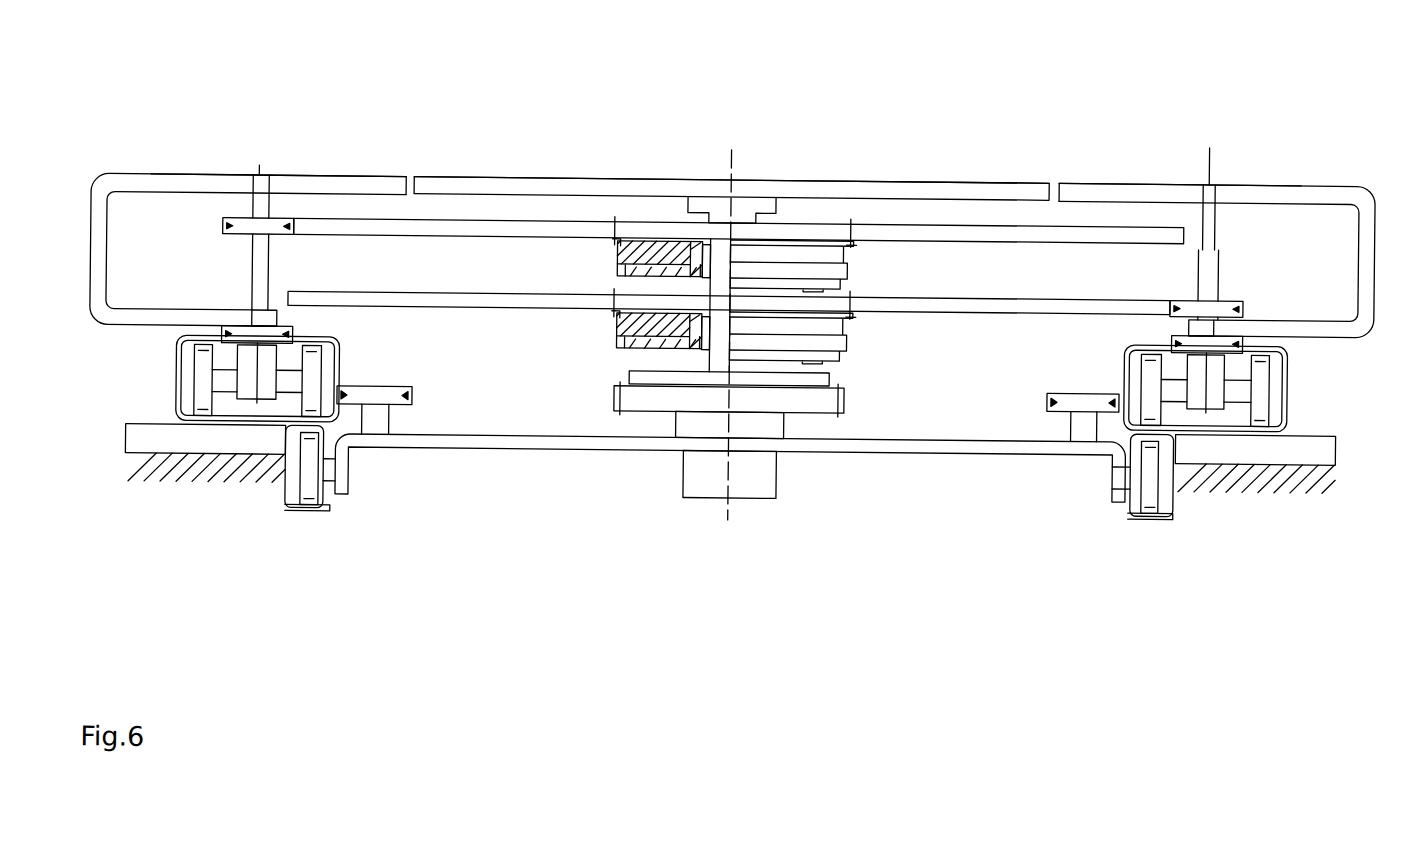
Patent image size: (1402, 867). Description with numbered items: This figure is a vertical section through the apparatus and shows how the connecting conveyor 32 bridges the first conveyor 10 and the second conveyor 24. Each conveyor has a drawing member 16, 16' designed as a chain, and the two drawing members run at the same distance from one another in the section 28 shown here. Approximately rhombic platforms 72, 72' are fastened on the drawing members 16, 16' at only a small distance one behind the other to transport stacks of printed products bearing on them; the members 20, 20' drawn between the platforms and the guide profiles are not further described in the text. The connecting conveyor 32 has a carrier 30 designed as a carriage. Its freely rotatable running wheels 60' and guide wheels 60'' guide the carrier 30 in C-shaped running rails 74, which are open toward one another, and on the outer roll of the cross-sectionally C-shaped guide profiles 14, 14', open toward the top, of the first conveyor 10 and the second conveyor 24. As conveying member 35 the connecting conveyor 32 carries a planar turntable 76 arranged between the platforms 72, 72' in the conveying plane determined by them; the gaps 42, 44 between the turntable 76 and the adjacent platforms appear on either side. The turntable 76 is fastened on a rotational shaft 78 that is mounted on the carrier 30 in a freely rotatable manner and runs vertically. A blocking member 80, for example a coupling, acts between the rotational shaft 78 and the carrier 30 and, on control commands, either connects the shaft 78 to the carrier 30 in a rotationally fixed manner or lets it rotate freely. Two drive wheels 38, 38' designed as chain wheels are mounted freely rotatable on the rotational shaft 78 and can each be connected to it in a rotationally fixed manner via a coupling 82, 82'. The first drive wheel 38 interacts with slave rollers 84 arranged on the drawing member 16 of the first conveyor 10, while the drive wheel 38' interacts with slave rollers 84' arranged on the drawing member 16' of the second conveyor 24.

The first conveyor 10 is at (1335, 172).
The guide profile 14 is at (1253, 384).
The guide profile 14' is at (216, 373).
The drawing member 16 is at (1281, 377).
The drawing member 16' is at (197, 371).
The right shaft 20 is at (1234, 213).
The left shaft 20' is at (254, 182).
The second conveyor 24 is at (110, 145).
The section 28 is at (487, 486).
The carrier 30 is at (920, 443).
The connecting conveyor 32 is at (838, 127).
The conveying member 35 is at (585, 180).
The first drive wheel 38 is at (729, 282).
The drive wheel 38' is at (738, 249).
The right gap 42 is at (1048, 162).
The left gap 44 is at (405, 149).
The running wheels 60' is at (728, 503).
The guide wheels 60'' is at (728, 384).
The platforms 72 is at (1180, 132).
The left top frame bar 72' is at (279, 113).
The running rails 74 is at (290, 515).
The turntable 76 is at (868, 189).
The rotational shaft 78 is at (740, 215).
The blocking member 80 is at (836, 398).
The coupling 82 is at (692, 327).
The coupling 82' is at (691, 254).
The slave rollers 84 is at (1236, 275).
The slave rollers 84' is at (215, 244).